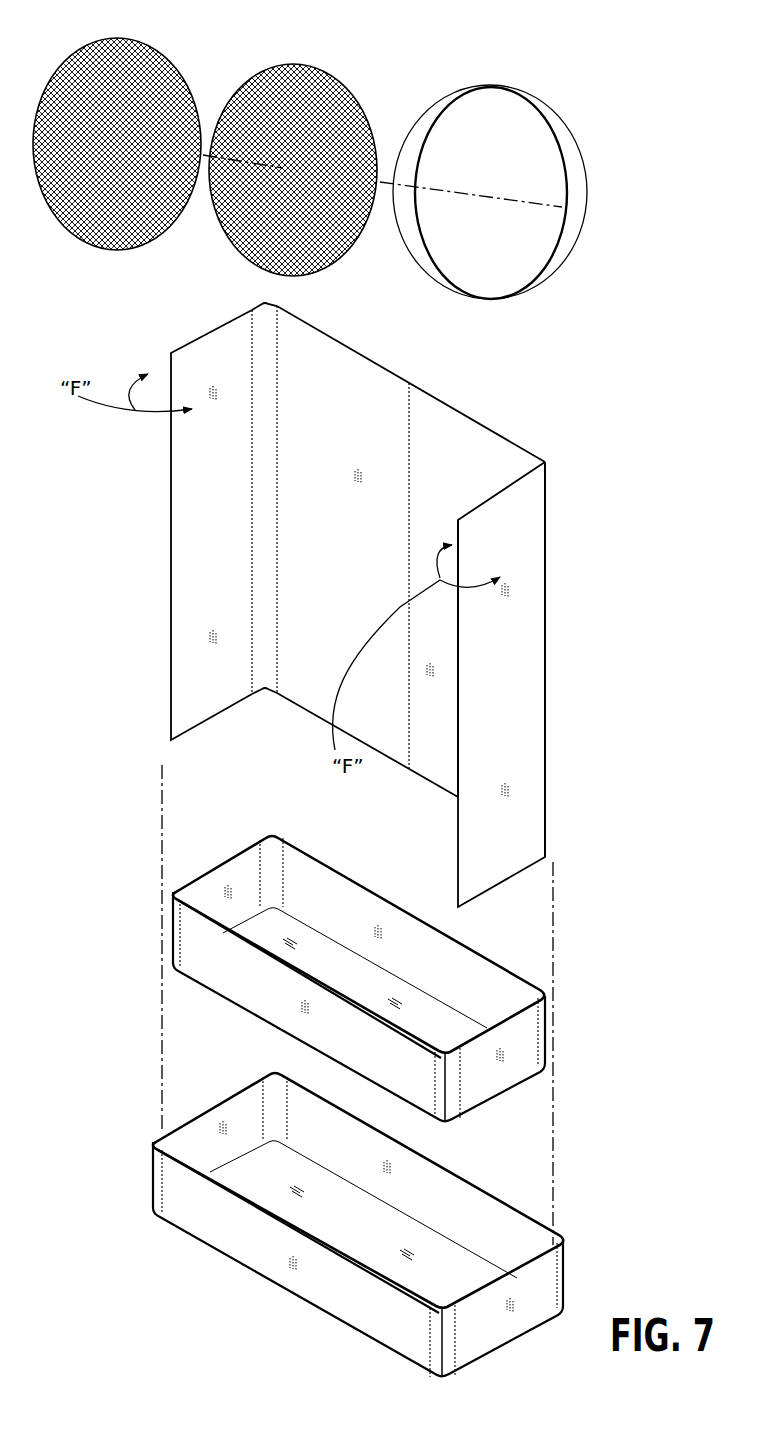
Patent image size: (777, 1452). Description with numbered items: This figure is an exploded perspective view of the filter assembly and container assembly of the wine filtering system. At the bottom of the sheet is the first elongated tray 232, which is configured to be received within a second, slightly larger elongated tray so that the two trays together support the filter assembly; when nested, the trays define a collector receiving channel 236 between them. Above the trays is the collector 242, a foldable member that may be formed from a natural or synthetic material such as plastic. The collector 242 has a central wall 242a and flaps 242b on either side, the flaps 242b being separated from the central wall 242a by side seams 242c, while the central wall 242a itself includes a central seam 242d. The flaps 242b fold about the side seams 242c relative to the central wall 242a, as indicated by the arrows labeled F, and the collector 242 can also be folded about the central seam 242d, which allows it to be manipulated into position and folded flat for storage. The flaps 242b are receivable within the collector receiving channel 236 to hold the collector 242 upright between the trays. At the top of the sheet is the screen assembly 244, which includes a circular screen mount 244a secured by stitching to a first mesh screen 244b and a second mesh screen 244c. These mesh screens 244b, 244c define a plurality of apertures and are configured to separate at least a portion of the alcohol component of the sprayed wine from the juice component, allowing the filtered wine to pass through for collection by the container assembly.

The first elongated tray 232 is at (530, 1038).
The collector receiving channel 236 is at (553, 1278).
The collector 242 is at (351, 605).
The central wall 242a is at (302, 515).
The flaps 242b is at (180, 512).
The side seams 242c is at (262, 341).
The central seam 242d is at (410, 464).
The screen assembly 244 is at (530, 207).
The screen mount 244a is at (550, 263).
The first mesh screen 244b is at (322, 103).
The second mesh screen 244c is at (122, 78).